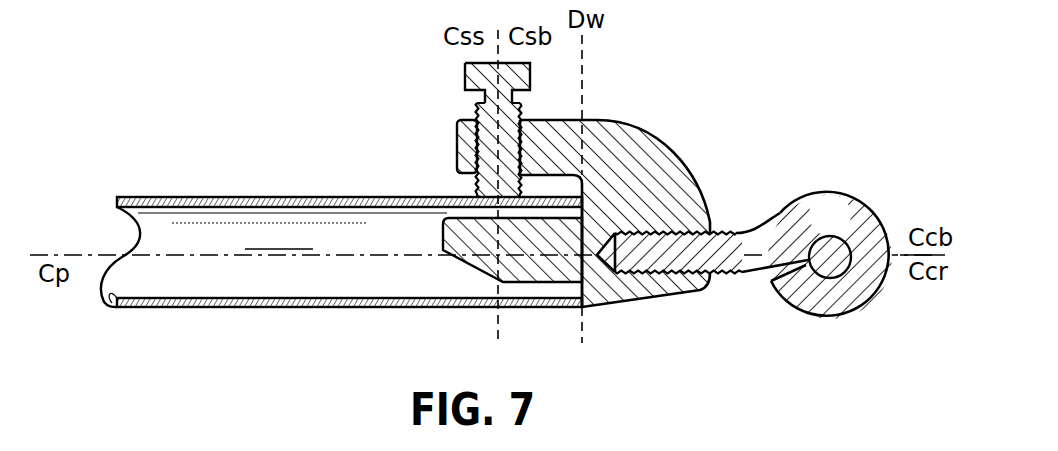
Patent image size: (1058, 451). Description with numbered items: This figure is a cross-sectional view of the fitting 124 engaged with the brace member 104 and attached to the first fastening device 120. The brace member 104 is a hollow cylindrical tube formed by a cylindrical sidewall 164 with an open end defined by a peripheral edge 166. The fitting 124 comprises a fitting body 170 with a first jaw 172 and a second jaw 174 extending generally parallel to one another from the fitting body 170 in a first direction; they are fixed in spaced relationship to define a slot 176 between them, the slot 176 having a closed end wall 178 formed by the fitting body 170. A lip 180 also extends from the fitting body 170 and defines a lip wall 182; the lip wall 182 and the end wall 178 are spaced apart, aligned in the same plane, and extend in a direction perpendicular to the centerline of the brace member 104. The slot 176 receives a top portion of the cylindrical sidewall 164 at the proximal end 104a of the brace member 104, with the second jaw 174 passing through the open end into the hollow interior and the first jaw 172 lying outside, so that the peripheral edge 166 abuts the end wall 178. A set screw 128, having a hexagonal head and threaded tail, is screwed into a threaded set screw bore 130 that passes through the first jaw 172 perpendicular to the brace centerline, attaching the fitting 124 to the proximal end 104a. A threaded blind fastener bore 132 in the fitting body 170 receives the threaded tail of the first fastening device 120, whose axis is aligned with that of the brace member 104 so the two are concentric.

The brace member 104 is at (188, 310).
The proximal end 104a is at (398, 323).
The cylindrical sidewall 164 is at (220, 197).
The peripheral edge 166 is at (580, 307).
The second jaw 174 is at (472, 250).
The fitting 124 is at (693, 167).
The slot 176 is at (533, 185).
The end wall 178 is at (588, 185).
The lip wall 182 is at (590, 295).
The lip 180 is at (590, 312).
The fitting body 170 is at (668, 212).
The fastener bore 132 is at (660, 277).
The first fastening device 120 is at (868, 318).
The set screw 128 is at (450, 70).
The set screw bore 130 is at (458, 133).
The first jaw 172 is at (458, 152).